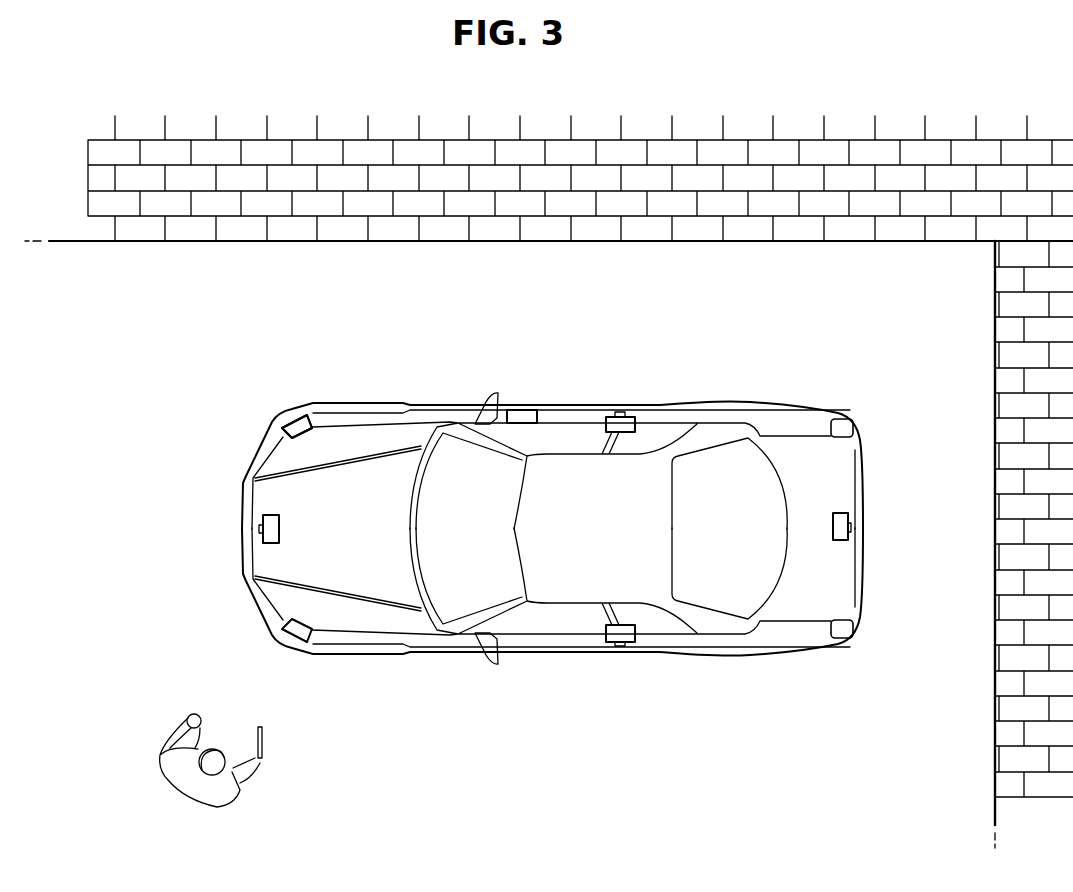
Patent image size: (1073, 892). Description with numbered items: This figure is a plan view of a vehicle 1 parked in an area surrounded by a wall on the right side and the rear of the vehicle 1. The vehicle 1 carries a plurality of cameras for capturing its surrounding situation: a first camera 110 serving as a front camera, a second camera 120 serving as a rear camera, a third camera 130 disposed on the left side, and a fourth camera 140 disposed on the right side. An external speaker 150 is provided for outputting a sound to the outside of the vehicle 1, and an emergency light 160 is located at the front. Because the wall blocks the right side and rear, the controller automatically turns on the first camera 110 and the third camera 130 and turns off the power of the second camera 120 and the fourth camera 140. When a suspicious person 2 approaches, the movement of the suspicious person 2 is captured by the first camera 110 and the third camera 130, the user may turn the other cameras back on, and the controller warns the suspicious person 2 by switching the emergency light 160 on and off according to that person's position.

The vehicle 1 is at (794, 345).
The suspicious person 2 is at (196, 783).
The first camera 110 is at (280, 529).
The second camera 120 is at (833, 528).
The third camera 130 is at (620, 647).
The fourth camera 140 is at (620, 412).
The external speaker 150 is at (528, 411).
The emergency light 160 is at (302, 425).